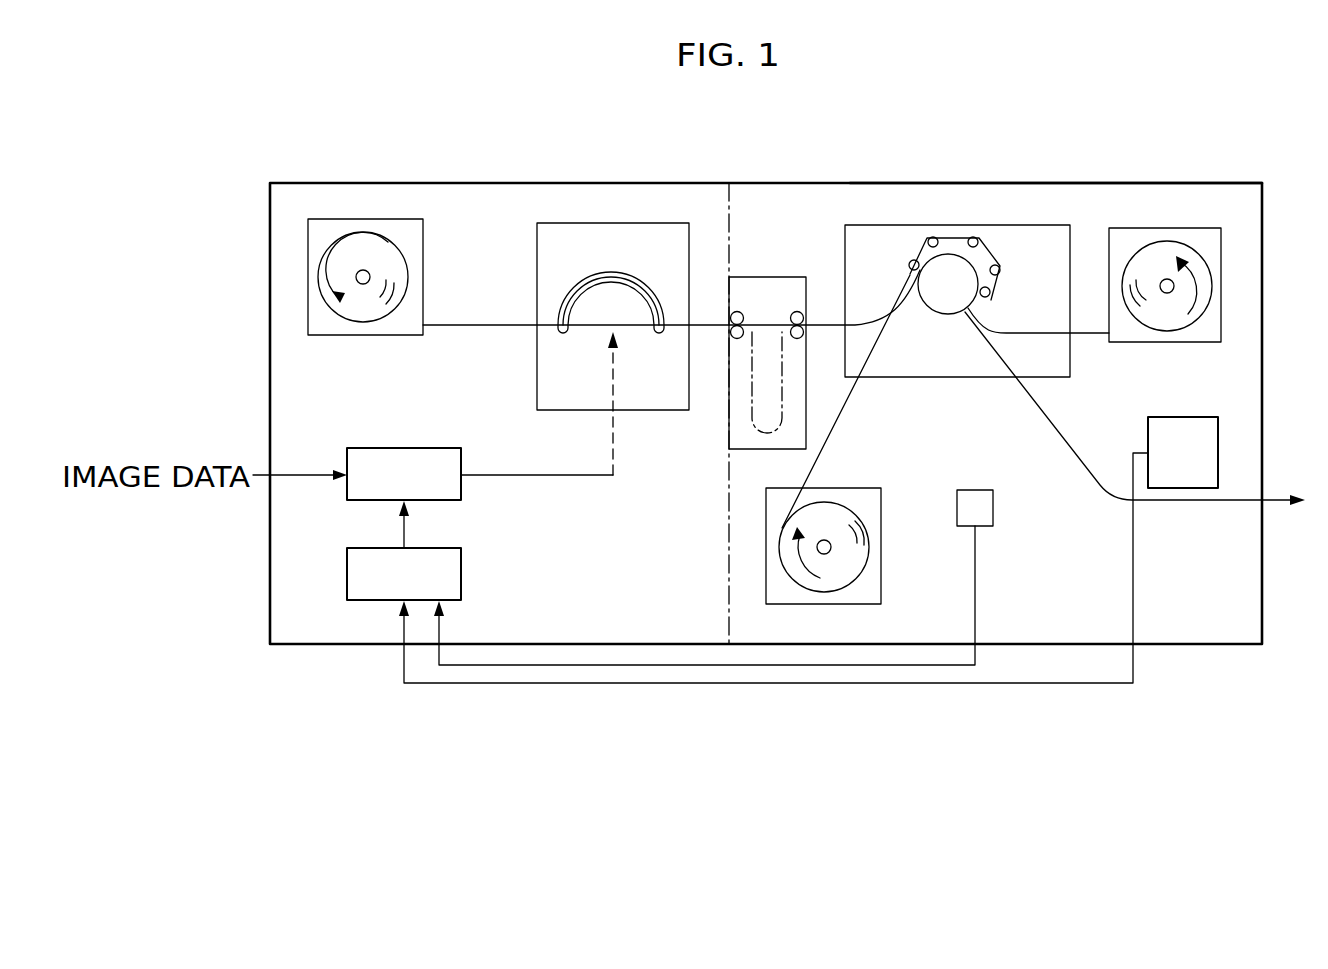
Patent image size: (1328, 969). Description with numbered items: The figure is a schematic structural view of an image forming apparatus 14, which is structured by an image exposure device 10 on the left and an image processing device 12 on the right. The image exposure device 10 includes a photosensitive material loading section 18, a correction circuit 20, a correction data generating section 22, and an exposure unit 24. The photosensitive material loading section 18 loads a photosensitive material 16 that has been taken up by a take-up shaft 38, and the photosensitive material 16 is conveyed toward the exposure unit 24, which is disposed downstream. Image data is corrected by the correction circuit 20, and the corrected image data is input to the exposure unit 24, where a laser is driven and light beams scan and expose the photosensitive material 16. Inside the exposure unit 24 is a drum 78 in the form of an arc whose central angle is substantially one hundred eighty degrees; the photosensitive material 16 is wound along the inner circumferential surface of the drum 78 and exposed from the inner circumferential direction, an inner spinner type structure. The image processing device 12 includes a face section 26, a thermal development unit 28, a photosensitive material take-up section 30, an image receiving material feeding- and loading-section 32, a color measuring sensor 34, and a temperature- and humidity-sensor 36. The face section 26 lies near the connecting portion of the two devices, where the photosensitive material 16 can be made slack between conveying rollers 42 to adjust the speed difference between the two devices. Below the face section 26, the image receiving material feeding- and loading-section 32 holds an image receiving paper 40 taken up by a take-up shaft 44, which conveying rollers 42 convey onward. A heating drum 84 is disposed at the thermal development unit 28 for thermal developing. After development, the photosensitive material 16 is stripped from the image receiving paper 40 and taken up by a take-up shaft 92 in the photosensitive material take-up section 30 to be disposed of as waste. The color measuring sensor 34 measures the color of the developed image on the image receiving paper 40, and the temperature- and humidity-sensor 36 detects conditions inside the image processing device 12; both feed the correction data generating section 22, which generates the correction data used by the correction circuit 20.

The image exposure device 10 is at (651, 183).
The image processing device 12 is at (1038, 185).
The image forming apparatus 14 is at (1256, 158).
The photosensitive material 16 is at (488, 324).
The photosensitive material loading section 18 is at (386, 219).
The correction circuit 20 is at (448, 448).
The correction data generating section 22 is at (461, 593).
The exposure unit 24 is at (613, 343).
The face section 26 is at (758, 277).
The thermal development unit 28 is at (985, 258).
The photosensitive material take-up section 30 is at (1213, 342).
The image receiving material feeding- and loading-section 32 is at (855, 488).
The color measuring sensor 34 is at (1170, 417).
The temperature- and humidity-sensor 36 is at (993, 510).
The take-up shaft 38 is at (370, 273).
The image receiving paper 40 is at (838, 411).
The conveying rollers 42 is at (803, 315).
The take-up shaft 44 is at (831, 551).
The drum 78 is at (648, 326).
The heating drum 84 is at (938, 300).
The take-up shaft 92 is at (1164, 280).